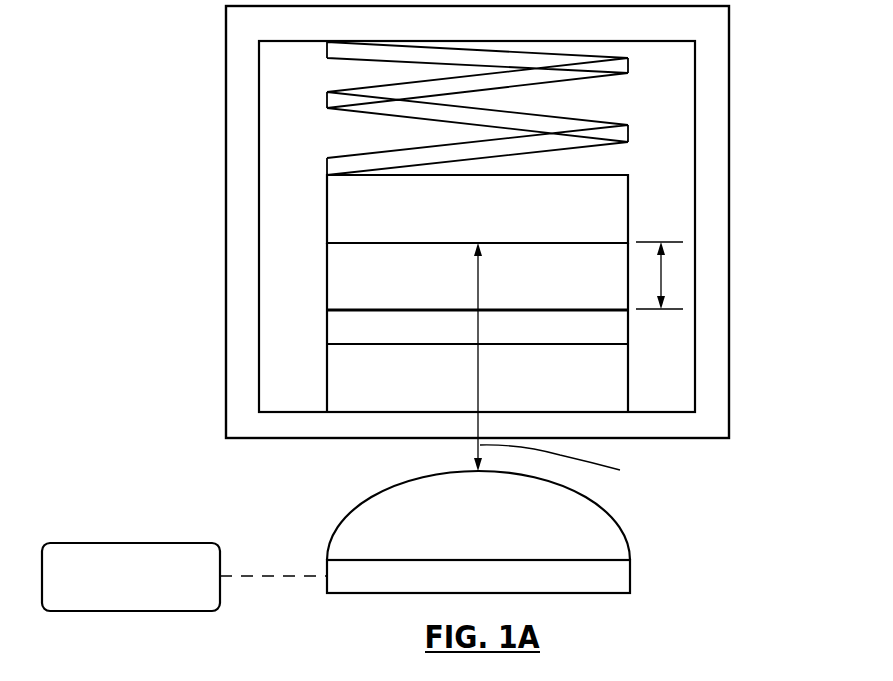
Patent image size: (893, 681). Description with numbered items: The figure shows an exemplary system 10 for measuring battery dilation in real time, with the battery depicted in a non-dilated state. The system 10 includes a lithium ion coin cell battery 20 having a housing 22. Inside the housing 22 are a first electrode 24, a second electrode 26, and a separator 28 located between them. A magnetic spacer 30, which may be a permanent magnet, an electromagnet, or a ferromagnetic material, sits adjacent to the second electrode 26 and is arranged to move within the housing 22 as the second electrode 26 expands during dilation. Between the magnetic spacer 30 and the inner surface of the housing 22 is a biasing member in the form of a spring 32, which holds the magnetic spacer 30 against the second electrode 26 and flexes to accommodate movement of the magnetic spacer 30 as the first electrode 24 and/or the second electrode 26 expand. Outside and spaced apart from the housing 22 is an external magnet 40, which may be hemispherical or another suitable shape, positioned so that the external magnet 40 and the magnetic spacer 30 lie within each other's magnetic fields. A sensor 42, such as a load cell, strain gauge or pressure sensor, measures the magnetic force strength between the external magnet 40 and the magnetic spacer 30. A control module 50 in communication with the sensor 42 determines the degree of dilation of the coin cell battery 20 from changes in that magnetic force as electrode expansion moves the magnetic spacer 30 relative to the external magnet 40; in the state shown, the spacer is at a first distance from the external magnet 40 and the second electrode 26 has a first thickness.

The system 10 is at (156, 64).
The coin cell battery 20 is at (729, 59).
The housing 22 is at (712, 126).
The first electrode 24 is at (343, 370).
The second electrode 26 is at (343, 278).
The separator 28 is at (343, 328).
The magnetic spacer 30 is at (343, 211).
The spring 32 is at (333, 108).
The external magnet 40 is at (594, 541).
The sensor 42 is at (610, 581).
The control module 50 is at (122, 543).